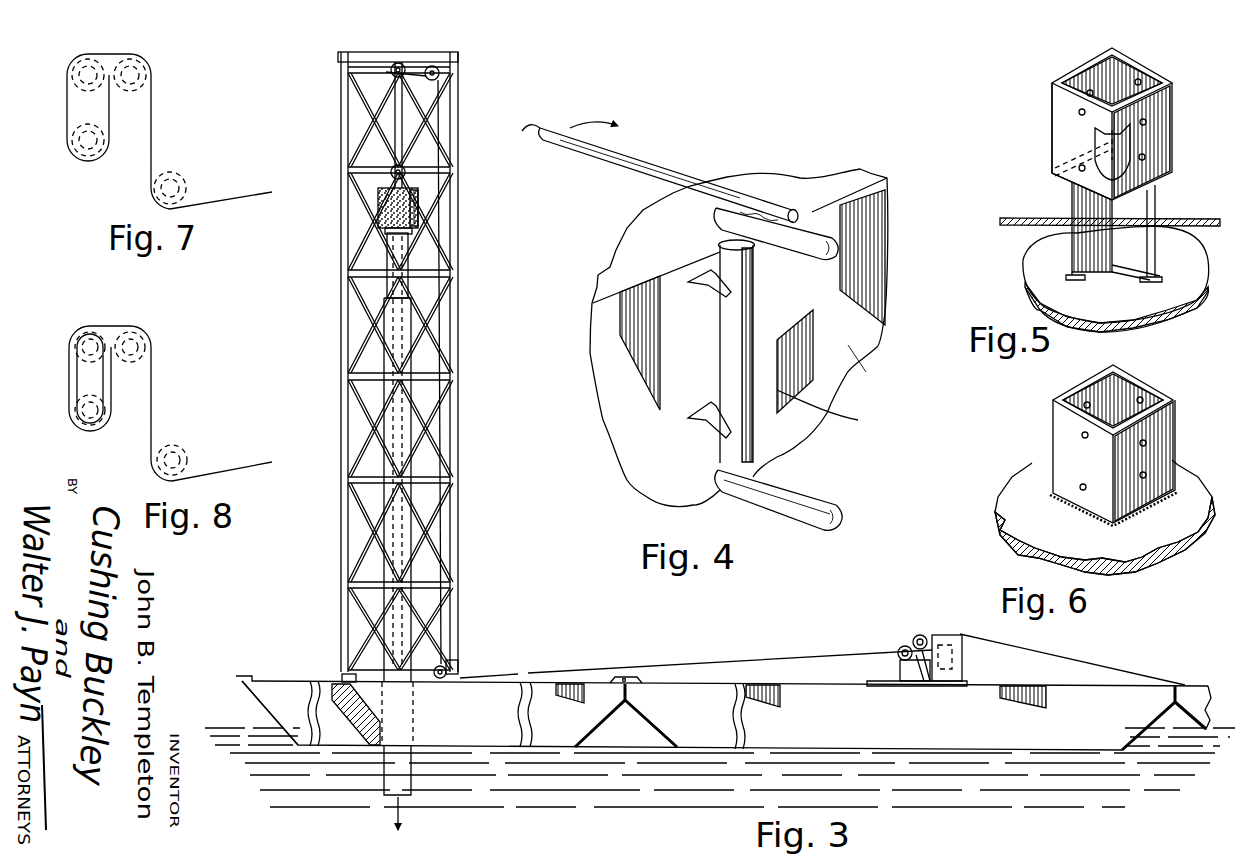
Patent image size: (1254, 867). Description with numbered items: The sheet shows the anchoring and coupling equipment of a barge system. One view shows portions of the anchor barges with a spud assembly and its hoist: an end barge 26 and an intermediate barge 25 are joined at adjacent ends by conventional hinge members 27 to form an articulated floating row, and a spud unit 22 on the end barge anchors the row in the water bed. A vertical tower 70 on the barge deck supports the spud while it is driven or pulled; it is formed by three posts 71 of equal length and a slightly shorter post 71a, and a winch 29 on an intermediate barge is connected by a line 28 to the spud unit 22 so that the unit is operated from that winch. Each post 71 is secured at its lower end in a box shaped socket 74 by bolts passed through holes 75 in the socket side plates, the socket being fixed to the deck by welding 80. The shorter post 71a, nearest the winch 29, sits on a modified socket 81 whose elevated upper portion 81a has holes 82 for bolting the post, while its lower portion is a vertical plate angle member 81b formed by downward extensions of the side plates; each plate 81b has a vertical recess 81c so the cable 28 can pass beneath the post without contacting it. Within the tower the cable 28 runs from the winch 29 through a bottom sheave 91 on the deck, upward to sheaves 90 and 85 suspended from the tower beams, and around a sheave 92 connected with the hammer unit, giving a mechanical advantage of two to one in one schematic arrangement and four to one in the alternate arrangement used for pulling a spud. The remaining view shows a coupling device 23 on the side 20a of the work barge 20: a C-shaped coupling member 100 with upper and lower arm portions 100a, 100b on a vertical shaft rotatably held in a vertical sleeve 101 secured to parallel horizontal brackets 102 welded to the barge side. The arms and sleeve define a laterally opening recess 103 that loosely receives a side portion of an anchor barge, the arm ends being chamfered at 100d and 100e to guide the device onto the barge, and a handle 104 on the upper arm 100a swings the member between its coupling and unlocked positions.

In FIG. 4, the work barge 20 is at (840, 168).
In FIG. 4, the cab 20a is at (840, 378).
In FIG. 3, the spud unit 22 is at (336, 300).
In FIG. 4, the coupling device 23 is at (706, 170).
In FIG. 3, the intermediate barge 25 is at (1202, 686).
In FIG. 3, the end barge 26 is at (284, 682).
In FIG. 3, the hinge member 27 is at (643, 681).
In FIG. 7, the line 28 is at (242, 200).
In FIG. 8, the line 28 is at (248, 464).
In FIG. 3, the line 28 is at (394, 104).
In FIG. 5, the line 28 is at (1203, 232).
In FIG. 3, the winch 29 is at (948, 616).
In FIG. 3, the vertical tower 70 is at (338, 141).
In FIG. 3, the post 71 is at (342, 420).
In FIG. 3, the shorter post 71a is at (458, 372).
In FIG. 3, the box shaped socket 74 is at (336, 680).
In FIG. 6, the box shaped socket 74 is at (1052, 424).
In FIG. 6, the holes 75 is at (1146, 441).
In FIG. 6, the welding 80 is at (1034, 482).
In FIG. 3, the modified socket 81 is at (460, 668).
In FIG. 5, the modified socket 81 is at (1050, 123).
In FIG. 5, the upper portion of socket 81a is at (1050, 100).
In FIG. 5, the vertical plate angle member 81b is at (1137, 202).
In FIG. 5, the vertical recess 81c is at (1072, 197).
In FIG. 5, the holes 82 is at (1146, 122).
In FIG. 7, the sheave 85 is at (72, 64).
In FIG. 8, the sheave 85 is at (72, 336).
In FIG. 3, the sheave 85 is at (392, 62).
In FIG. 7, the sheave 90 is at (148, 62).
In FIG. 8, the sheave 90 is at (152, 342).
In FIG. 3, the sheave 90 is at (441, 75).
In FIG. 7, the bottom sheave 91 is at (178, 170).
In FIG. 8, the bottom sheave 91 is at (180, 446).
In FIG. 3, the bottom sheave 91 is at (450, 664).
In FIG. 7, the sheave 92 is at (66, 158).
In FIG. 8, the sheave 92 is at (74, 404).
In FIG. 3, the sheave 92 is at (392, 170).
In FIG. 4, the C-shaped coupling member 100 is at (824, 379).
In FIG. 4, the upper arm portion 100a is at (791, 234).
In FIG. 4, the lower arm portion 100b is at (770, 490).
In FIG. 4, the chamfer 100d is at (820, 252).
In FIG. 4, the chamfer 100e is at (830, 506).
In FIG. 4, the vertical sleeve 101 is at (720, 340).
In FIG. 4, the horizontal brackets 102 is at (710, 290).
In FIG. 4, the laterally opening recess 103 is at (835, 412).
In FIG. 4, the handle 104 is at (588, 146).